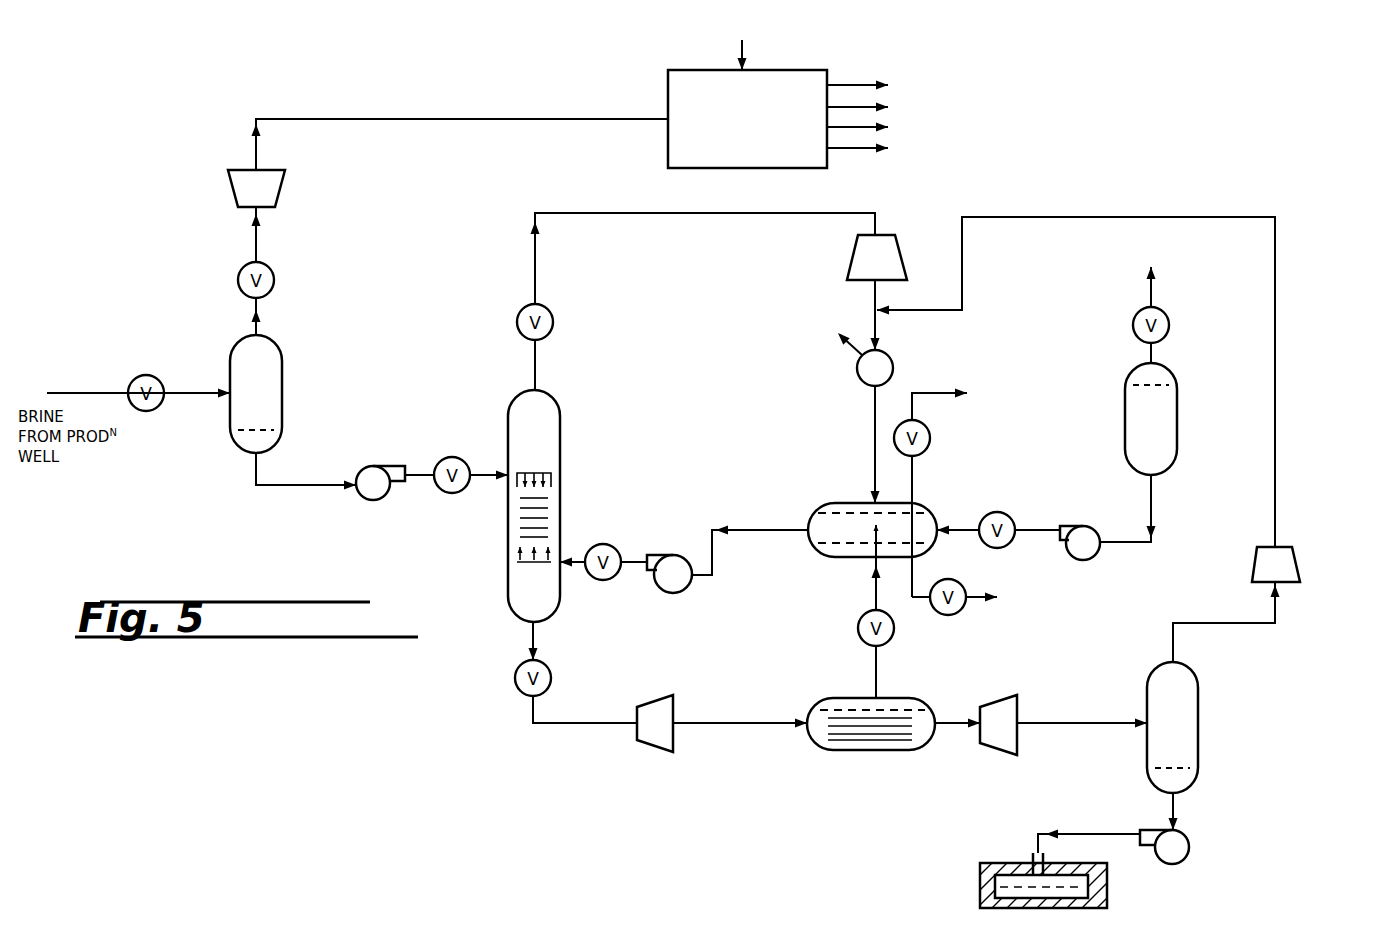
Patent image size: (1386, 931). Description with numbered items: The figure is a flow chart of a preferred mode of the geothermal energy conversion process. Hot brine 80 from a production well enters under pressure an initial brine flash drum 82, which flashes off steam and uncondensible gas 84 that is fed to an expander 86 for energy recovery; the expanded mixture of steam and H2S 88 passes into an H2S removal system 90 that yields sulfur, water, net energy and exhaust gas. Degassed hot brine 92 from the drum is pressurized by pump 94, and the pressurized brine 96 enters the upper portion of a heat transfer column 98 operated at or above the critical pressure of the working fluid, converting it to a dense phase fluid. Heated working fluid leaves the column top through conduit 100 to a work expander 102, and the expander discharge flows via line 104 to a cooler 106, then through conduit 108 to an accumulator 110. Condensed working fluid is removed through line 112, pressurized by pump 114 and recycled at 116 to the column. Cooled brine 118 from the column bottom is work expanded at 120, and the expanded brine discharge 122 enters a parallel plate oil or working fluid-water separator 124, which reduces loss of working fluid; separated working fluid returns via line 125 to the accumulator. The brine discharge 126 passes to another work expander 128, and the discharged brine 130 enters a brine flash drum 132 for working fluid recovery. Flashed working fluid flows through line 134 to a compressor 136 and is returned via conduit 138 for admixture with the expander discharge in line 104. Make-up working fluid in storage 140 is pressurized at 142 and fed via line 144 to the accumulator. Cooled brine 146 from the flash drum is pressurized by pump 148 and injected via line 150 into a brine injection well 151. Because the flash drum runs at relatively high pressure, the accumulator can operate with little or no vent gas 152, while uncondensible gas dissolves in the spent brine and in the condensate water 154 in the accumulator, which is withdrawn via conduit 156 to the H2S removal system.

The hot water-containing fluid or brine 80 is at (190, 392).
The initial brine flash drum 82 is at (283, 368).
The steam and uncondensible gas 84 is at (258, 244).
The expander 86 is at (285, 180).
The expanded mixture of steam and H2S 88 is at (398, 117).
The H2S removal system 90 is at (806, 60).
The degassed hot brine 92 is at (321, 483).
The pump 94 is at (385, 468).
The pressurized brine 96 is at (478, 470).
The heat transfer column 98 is at (560, 466).
The conduit 100 is at (630, 213).
The work expander 102 is at (858, 252).
The line 104 is at (872, 326).
The cooler 106 is at (858, 377).
The conduit 108 is at (873, 438).
The accumulator 110 is at (808, 515).
The line 112 is at (752, 528).
The pump 114 is at (680, 590).
The recycled working fluid 116 is at (578, 552).
The cooled brine 118 is at (535, 633).
The work expander 120 is at (653, 705).
The expanded brine discharge 122 is at (731, 720).
The parallel plate oil or working fluid-water separator 124 is at (831, 700).
The line 125 is at (873, 588).
The brine discharge 126 is at (945, 730).
The work expander 128 is at (1005, 755).
The discharged brine 130 is at (1088, 728).
The brine flash drum 132 is at (1200, 700).
The line 134 is at (1280, 607).
The compressor 136 is at (1290, 556).
The conduit 138 is at (1277, 322).
The make-up working fluid storage 140 is at (1177, 450).
The pump 142 is at (1075, 525).
The line 144 is at (966, 522).
The cooled brine 146 is at (1178, 806).
The pump 148 is at (1190, 848).
The line 150 is at (1090, 831).
The brine injection well 151 is at (1030, 855).
The vent gas 152 is at (930, 390).
The condensate water 154 is at (922, 548).
The conduit 156 is at (976, 607).